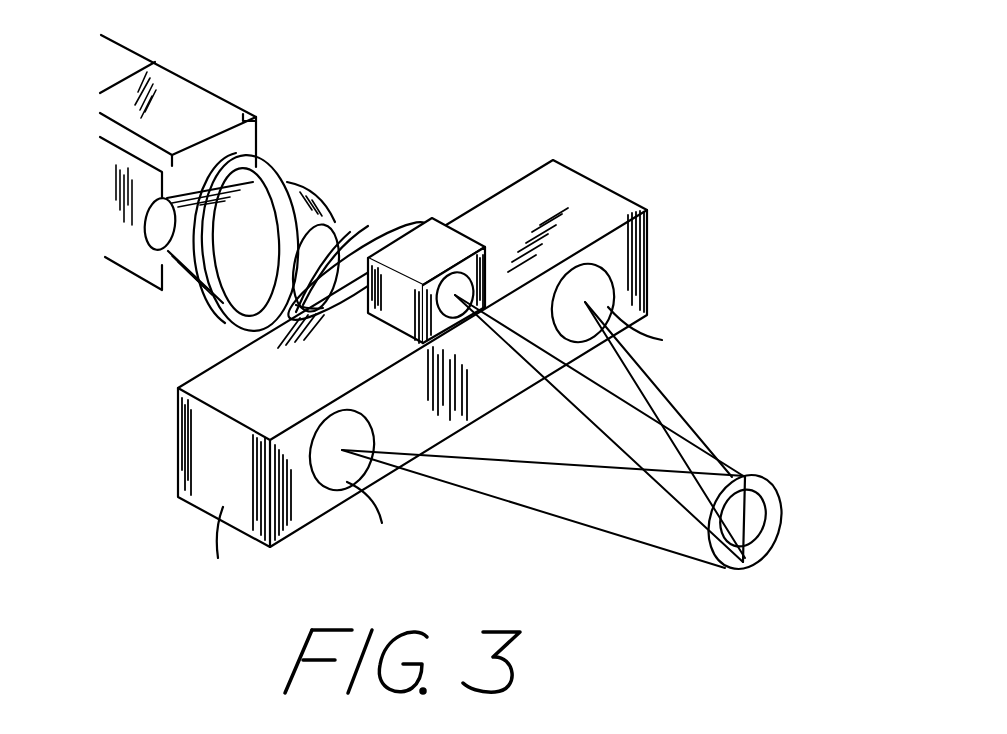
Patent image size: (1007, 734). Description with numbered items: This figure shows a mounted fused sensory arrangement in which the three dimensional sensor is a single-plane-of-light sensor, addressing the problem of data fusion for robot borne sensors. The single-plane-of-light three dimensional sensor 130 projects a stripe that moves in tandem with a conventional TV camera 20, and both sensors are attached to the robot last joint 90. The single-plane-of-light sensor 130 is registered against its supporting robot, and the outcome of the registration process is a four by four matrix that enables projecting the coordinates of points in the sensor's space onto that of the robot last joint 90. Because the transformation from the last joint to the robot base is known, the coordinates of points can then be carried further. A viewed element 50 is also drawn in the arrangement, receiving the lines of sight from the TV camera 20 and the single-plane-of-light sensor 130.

The robot last joint 90 is at (392, 232).
The conventional TV camera S2 20 is at (427, 240).
The single-plane-of-light three dimensional sensor SP3 130 is at (592, 192).
The specimen tube 50 is at (760, 515).